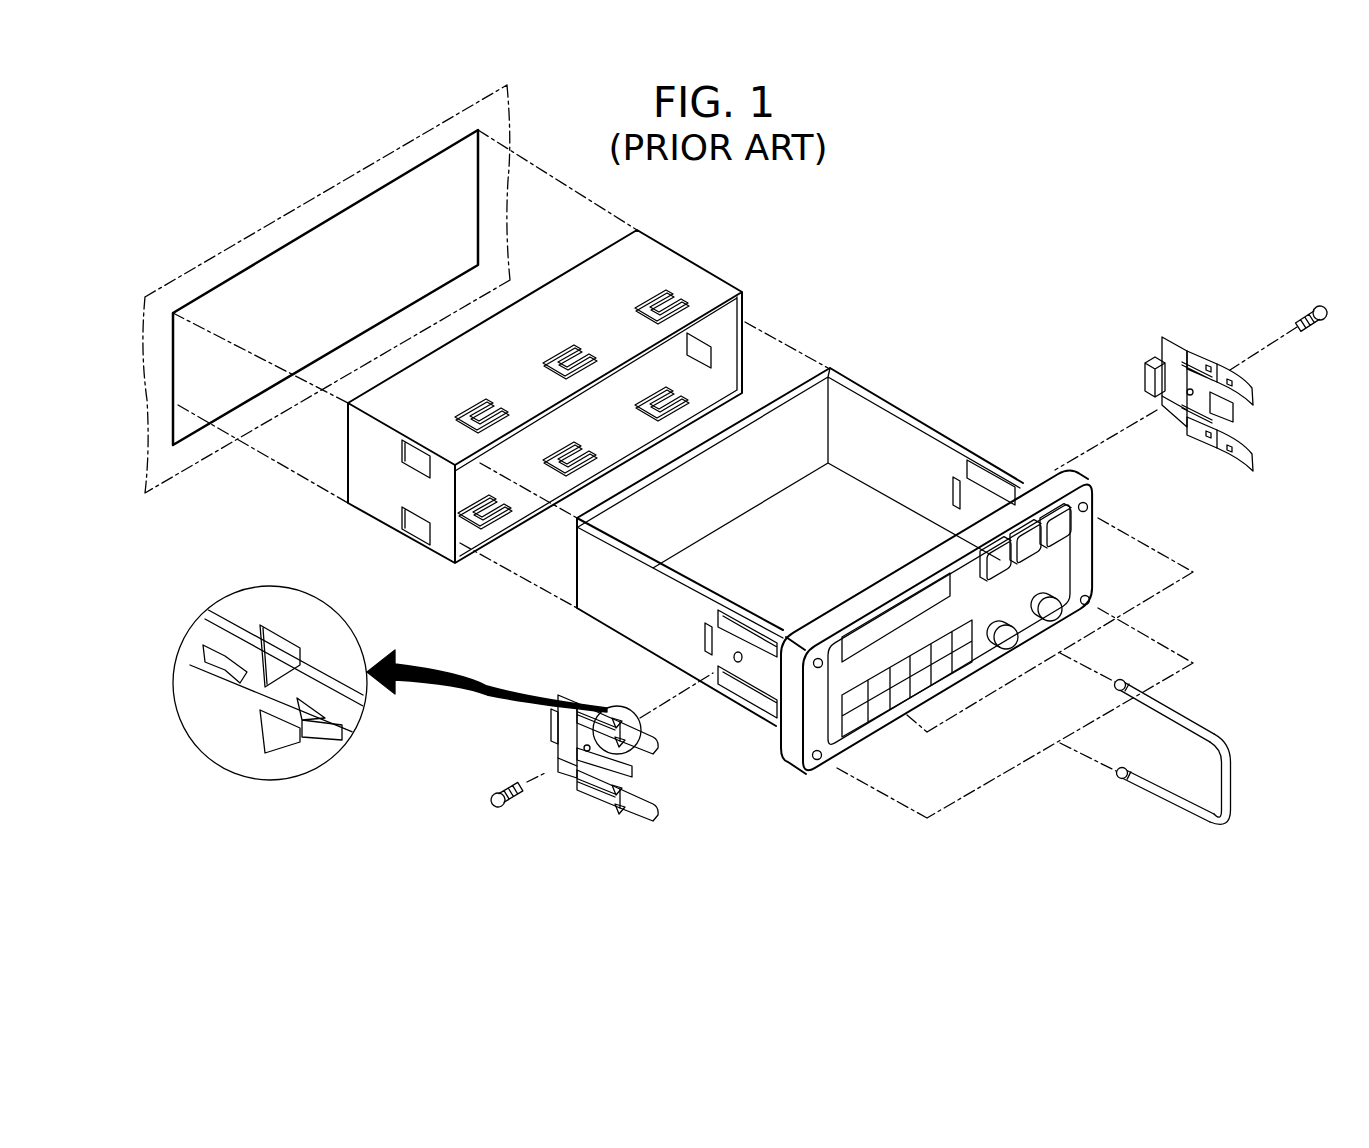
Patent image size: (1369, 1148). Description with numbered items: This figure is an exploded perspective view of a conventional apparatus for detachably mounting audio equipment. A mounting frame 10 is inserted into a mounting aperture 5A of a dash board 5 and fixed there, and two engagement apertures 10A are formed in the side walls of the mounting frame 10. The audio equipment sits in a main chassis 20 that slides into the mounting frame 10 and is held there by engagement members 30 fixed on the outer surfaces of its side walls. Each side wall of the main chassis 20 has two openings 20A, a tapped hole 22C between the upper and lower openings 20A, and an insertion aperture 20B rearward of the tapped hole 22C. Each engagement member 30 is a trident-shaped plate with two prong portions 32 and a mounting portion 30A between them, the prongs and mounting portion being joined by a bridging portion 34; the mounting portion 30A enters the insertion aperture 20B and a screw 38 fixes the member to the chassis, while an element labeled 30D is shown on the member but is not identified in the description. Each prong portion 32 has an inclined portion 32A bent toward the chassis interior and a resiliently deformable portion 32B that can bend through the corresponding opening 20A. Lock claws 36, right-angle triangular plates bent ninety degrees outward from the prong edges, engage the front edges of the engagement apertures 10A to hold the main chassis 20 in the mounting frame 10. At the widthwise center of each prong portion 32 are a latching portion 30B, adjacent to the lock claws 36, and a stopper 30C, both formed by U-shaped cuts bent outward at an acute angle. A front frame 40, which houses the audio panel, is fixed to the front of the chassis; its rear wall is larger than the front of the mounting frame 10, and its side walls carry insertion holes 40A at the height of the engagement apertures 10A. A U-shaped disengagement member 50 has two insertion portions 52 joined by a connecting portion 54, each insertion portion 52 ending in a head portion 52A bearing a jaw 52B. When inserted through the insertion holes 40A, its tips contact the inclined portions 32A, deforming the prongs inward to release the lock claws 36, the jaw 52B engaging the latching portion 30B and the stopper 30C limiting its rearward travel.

The dash board 5 is at (240, 260).
The mounting aperture 5A is at (330, 275).
The mounting frame 10 is at (697, 252).
The engagement apertures 10A is at (425, 522).
The main chassis 20 is at (908, 387).
The openings 20A is at (748, 633).
The insertion aperture 20B is at (703, 633).
The tapped hole 22C is at (738, 660).
The engagement member 30 is at (1140, 347).
The mounting portion 30A is at (1143, 375).
The latching portion 30B is at (322, 733).
The stopper 30C is at (205, 668).
The hole 30D is at (1183, 389).
The prong portions 32 is at (1178, 278).
The inclined portion 32A is at (1250, 387).
The resiliently deformable portion 32B is at (1197, 362).
The bridging portion 34 is at (1178, 398).
The lock claws 36 is at (277, 647).
The screw 38 is at (1307, 318).
The front frame 40 is at (788, 777).
The insertion holes 40A is at (1095, 588).
The disengagement member 50 is at (1232, 727).
The insertion portions 52 is at (1173, 713).
The head portion 52A is at (1117, 777).
The jaw 52B is at (1126, 780).
The connecting portion 54 is at (1232, 788).